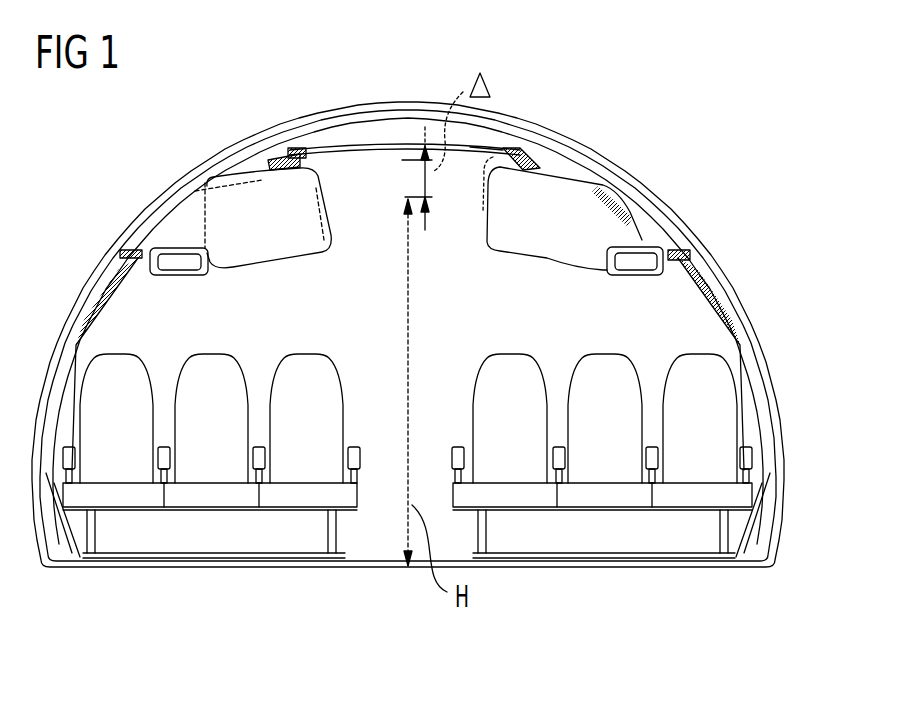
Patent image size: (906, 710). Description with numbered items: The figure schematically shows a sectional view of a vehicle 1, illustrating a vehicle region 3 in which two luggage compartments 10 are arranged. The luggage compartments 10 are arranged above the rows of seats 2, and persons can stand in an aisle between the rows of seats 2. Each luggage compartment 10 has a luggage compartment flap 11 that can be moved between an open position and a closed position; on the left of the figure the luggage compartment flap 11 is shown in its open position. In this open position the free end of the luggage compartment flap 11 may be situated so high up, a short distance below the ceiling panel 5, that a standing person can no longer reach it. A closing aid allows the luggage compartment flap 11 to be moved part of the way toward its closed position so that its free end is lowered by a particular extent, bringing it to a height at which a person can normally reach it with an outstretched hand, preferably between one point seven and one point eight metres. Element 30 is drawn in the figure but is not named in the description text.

The vehicle 1 is at (762, 344).
The rows of seats 2 is at (312, 492).
The vehicle region 3 is at (675, 318).
The ceiling panel 5 is at (424, 150).
The luggage compartment 10 is at (190, 213).
The luggage compartment flap 11 is at (368, 160).
The passenger service unit 30 is at (168, 250).